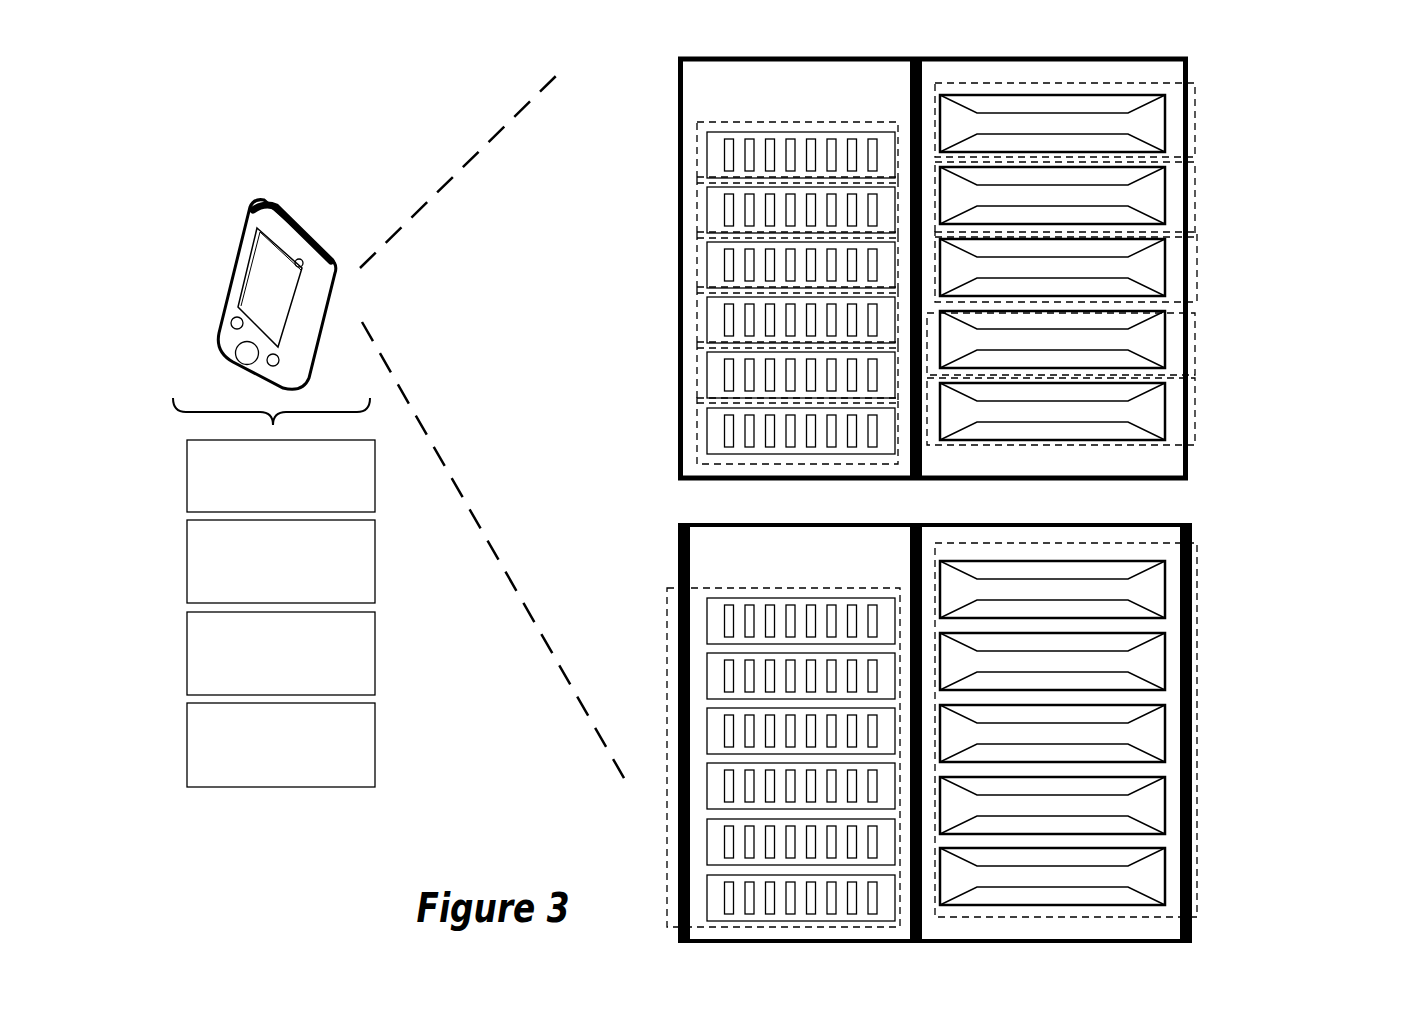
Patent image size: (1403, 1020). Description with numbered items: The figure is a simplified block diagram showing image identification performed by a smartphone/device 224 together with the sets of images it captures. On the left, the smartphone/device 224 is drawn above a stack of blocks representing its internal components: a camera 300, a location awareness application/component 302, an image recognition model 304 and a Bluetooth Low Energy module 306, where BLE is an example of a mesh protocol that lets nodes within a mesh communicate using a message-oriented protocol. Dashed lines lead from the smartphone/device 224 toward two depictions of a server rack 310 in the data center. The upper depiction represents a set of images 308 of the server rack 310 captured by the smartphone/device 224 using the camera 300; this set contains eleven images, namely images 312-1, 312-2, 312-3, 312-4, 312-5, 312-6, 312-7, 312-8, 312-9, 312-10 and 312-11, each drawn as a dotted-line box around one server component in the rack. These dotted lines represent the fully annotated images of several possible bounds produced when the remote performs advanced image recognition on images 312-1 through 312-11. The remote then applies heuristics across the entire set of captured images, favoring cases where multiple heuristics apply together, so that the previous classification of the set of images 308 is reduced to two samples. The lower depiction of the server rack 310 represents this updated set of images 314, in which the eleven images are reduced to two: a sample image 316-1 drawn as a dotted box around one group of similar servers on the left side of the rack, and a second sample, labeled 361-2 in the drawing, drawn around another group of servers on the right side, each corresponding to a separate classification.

The smartphone/device 224 is at (258, 200).
The camera 300 is at (265, 497).
The location awareness application/component 302 is at (265, 594).
The image recognition model 304 is at (265, 685).
The Bluetooth Low Energy (BLE) module 306 is at (265, 766).
The set of images 308 is at (980, 267).
The server rack 310 is at (679, 536).
The image 312-1 is at (698, 160).
The image 312-2 is at (698, 215).
The image 312-3 is at (698, 270).
The image 312-4 is at (698, 325).
The image 312-5 is at (698, 380).
The image 312-6 is at (698, 437).
The image 312-7 is at (1195, 100).
The image 312-8 is at (1195, 204).
The image 312-9 is at (1198, 272).
The image 312-10 is at (1195, 344).
The image 312-11 is at (1195, 417).
The updated set of images 314 is at (949, 730).
The sample image 316-1 is at (667, 612).
The server component group 361-2 is at (1197, 656).